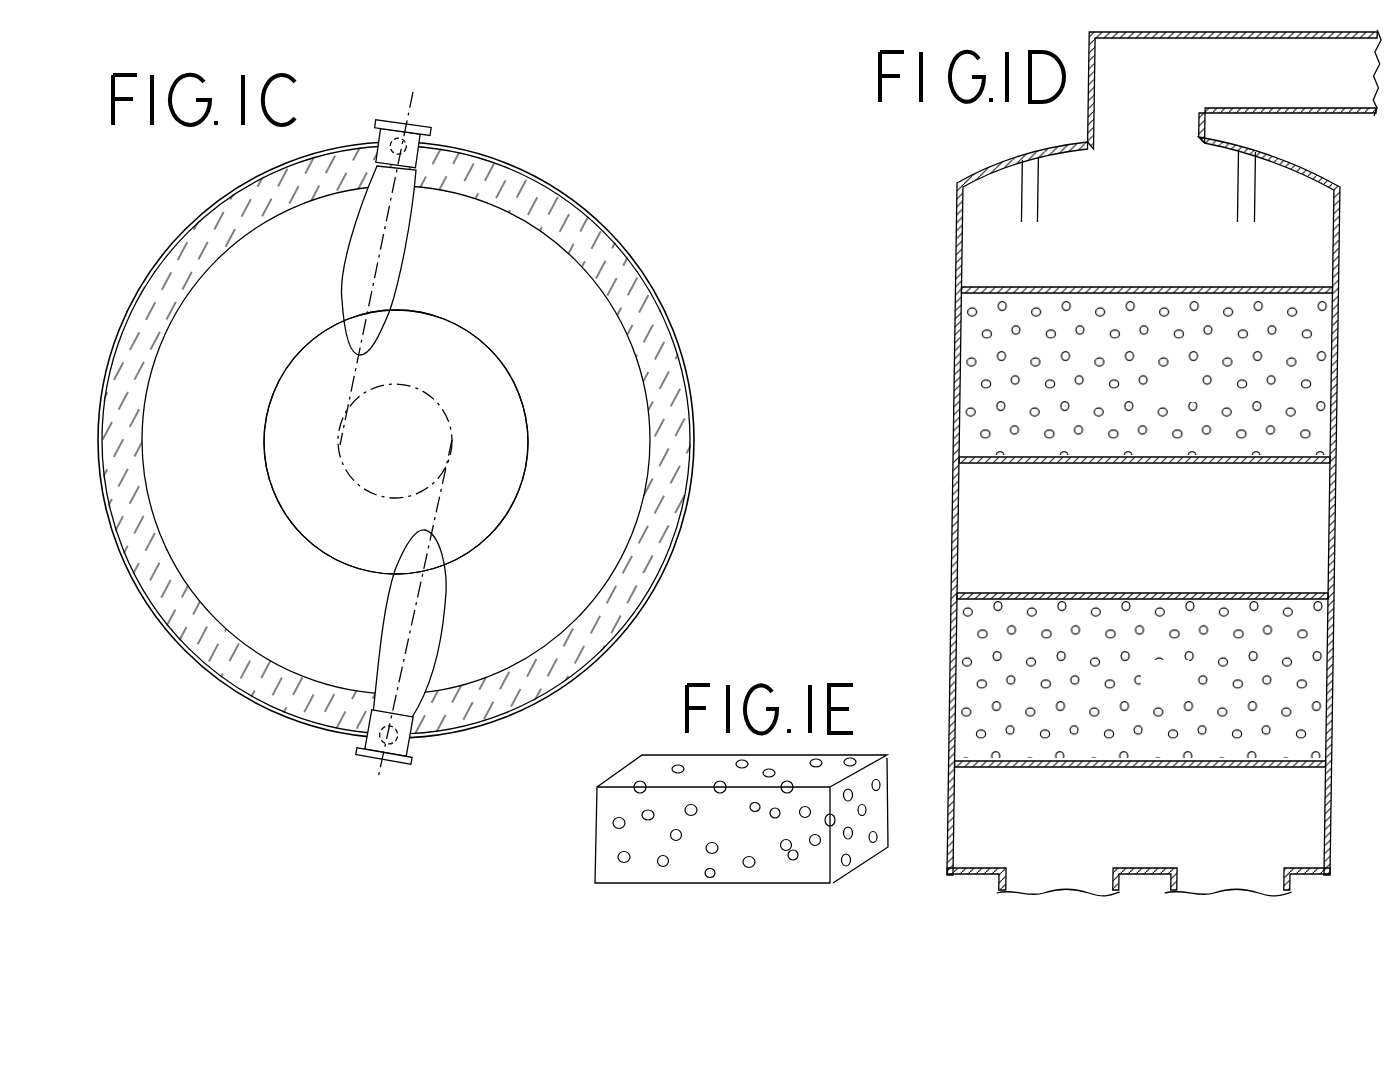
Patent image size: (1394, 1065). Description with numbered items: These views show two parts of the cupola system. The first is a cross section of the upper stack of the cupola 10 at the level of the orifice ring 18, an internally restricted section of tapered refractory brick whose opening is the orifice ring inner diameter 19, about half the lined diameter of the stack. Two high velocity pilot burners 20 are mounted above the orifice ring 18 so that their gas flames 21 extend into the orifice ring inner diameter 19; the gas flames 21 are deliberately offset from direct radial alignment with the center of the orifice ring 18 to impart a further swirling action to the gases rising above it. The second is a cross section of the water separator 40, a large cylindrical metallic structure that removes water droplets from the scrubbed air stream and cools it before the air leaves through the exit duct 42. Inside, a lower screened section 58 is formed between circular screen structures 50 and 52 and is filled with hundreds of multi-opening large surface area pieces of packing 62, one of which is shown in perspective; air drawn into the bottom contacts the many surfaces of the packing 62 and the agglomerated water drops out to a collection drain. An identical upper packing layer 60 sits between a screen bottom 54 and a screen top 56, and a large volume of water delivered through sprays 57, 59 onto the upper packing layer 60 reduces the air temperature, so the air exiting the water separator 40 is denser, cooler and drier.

In FIG. 1C, the cupola 10 is at (620, 630).
In FIG. 1C, the orifice ring 18 is at (585, 451).
In FIG. 1C, the orifice ring inner diameter 19 is at (511, 383).
In FIG. 1C, the pilot burners 20 is at (412, 748).
In FIG. 1C, the gas flames 21 is at (410, 250).
In FIG. 1D, the water separator 40 is at (952, 497).
In FIG. 1D, the exit duct 42 is at (1292, 113).
In FIG. 1D, the circular screen structure 50 is at (1188, 767).
In FIG. 1D, the circular screen structure 52 is at (1236, 593).
In FIG. 1D, the screen bottom 54 is at (1155, 463).
In FIG. 1D, the screen top 56 is at (1250, 287).
In FIG. 1D, the spray 57 is at (1034, 200).
In FIG. 1D, the screened section 58 is at (1184, 689).
In FIG. 1D, the spray 59 is at (1234, 195).
In FIG. 1D, the upper packing layer 60 is at (1192, 397).
In FIG. 1E, the packing 62 is at (884, 795).